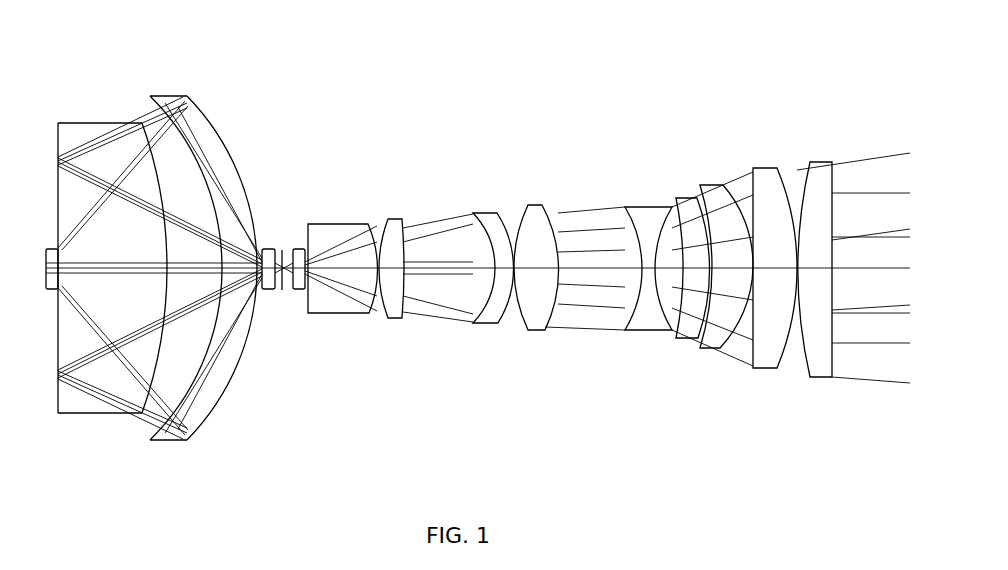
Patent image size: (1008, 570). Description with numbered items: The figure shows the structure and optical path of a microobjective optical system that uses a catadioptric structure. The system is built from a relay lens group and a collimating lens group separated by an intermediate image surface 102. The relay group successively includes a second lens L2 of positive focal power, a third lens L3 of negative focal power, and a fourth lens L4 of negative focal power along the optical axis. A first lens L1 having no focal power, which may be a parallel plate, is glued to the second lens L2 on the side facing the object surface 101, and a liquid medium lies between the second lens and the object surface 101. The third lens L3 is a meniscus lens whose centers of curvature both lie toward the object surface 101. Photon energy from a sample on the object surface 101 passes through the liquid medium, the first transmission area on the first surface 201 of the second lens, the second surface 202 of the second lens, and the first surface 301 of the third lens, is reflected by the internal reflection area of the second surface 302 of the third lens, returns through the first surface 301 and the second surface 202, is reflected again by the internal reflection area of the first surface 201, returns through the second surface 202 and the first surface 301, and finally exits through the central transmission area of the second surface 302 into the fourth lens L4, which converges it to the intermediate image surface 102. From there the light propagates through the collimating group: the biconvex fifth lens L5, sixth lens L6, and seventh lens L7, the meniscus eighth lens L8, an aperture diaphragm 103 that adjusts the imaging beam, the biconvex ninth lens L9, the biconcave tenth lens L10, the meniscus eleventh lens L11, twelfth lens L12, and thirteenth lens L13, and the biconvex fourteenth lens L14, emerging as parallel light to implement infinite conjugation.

The first lens L1 is at (50, 249).
The second lens L2 is at (111, 261).
The third lens L3 is at (203, 261).
The fourth lens L4 is at (270, 249).
The fifth lens L5 is at (301, 249).
The sixth lens L6 is at (340, 224).
The seventh lens L7 is at (395, 219).
The eighth lens L8 is at (485, 213).
The ninth lens L9 is at (537, 205).
The tenth lens L10 is at (650, 207).
The eleventh lens L11 is at (688, 198).
The twelfth lens L12 is at (717, 185).
The thirteenth lens L13 is at (767, 168).
The fourteenth lens L14 is at (822, 162).
The object surface 101 is at (37, 261).
The intermediate image surface 102 is at (282, 290).
The aperture diaphragm 103 is at (516, 261).
The first surface of the second lens 201 is at (61, 393).
The second surface of the second lens 202 is at (151, 392).
The first surface of the third lens 301 is at (180, 440).
The second surface of the third lens 302 is at (228, 386).